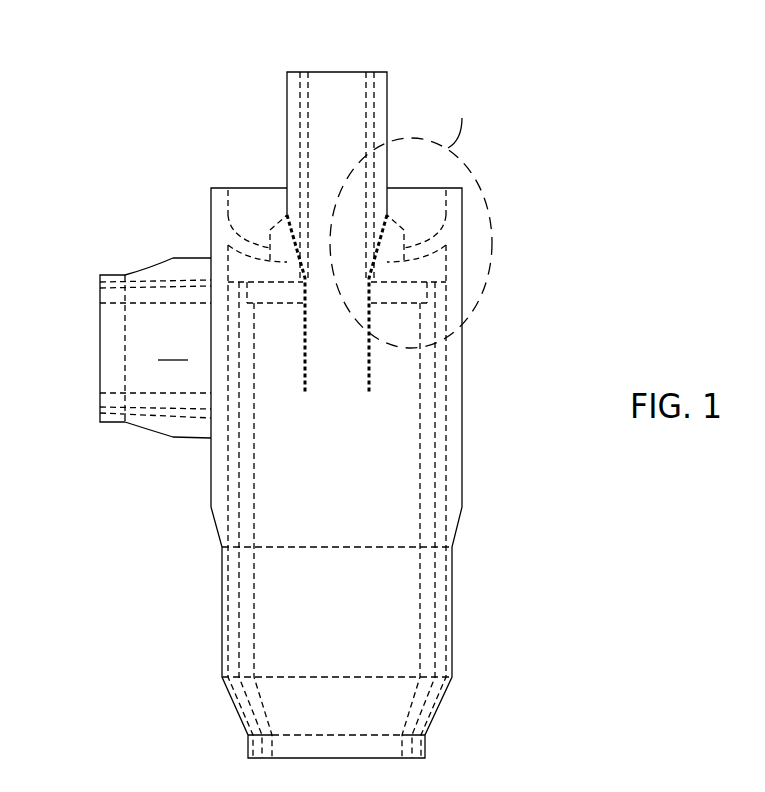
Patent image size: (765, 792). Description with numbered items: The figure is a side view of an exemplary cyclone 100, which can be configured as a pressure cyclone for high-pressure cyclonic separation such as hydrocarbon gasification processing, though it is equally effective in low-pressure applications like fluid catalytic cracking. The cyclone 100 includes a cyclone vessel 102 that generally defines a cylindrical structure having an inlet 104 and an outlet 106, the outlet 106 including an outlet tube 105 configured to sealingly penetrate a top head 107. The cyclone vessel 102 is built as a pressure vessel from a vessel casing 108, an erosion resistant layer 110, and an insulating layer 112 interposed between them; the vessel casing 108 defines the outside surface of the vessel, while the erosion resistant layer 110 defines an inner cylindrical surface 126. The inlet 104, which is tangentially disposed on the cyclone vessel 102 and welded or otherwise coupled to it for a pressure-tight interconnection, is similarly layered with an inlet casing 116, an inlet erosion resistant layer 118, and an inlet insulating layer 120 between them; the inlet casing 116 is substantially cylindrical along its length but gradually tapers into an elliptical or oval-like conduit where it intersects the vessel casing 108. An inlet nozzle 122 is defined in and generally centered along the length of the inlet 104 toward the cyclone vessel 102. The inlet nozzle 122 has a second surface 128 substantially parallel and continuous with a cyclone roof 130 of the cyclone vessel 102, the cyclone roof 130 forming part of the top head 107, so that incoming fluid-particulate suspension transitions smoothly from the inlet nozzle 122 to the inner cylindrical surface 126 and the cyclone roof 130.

The cyclone 100 is at (538, 160).
The cyclone vessel 102 is at (468, 350).
The inlet 104 is at (137, 427).
The outlet tube 105 is at (368, 367).
The outlet 106 is at (320, 70).
The top head 107 is at (433, 268).
The vessel casing 108 is at (455, 400).
The erosion resistant layer 110 is at (428, 452).
The insulating layer 112 is at (443, 426).
The inlet casing 116 is at (197, 267).
The inlet erosion resistant layer 118 is at (132, 298).
The inlet insulating layer 120 is at (153, 285).
The inlet nozzle 122 is at (158, 348).
The inner cylindrical surface 126 is at (254, 511).
The second surface 128 is at (137, 392).
The cyclone roof 130 is at (280, 305).